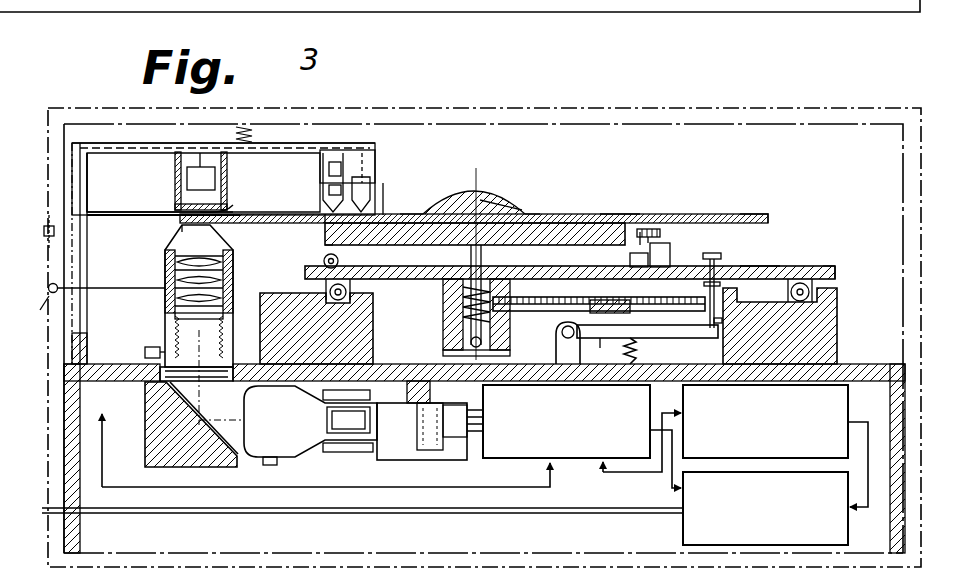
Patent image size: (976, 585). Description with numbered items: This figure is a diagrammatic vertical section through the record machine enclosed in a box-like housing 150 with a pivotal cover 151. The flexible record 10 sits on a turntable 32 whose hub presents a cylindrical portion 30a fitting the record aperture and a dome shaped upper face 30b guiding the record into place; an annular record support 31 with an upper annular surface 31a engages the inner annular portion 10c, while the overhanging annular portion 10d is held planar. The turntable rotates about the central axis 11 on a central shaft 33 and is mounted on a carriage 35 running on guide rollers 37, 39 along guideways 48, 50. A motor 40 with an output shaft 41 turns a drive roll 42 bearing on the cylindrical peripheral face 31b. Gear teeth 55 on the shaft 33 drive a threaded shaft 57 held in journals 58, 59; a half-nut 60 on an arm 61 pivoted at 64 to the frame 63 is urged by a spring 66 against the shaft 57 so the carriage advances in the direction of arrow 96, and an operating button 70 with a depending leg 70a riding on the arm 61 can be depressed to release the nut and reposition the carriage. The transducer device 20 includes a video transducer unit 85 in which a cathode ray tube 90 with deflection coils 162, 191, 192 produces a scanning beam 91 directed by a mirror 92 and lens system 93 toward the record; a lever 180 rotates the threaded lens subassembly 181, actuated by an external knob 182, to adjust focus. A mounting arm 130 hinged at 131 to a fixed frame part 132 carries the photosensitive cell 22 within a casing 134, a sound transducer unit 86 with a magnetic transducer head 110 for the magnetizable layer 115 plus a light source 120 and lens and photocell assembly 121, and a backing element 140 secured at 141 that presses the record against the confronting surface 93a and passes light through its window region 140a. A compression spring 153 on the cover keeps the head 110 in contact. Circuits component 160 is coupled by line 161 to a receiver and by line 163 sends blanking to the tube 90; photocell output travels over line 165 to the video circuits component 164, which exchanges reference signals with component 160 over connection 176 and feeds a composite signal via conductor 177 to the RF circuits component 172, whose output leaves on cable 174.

The record 10 is at (500, 192).
The inner annular portion 10c is at (625, 212).
The overhanging annular portion 10d is at (742, 212).
The central axis 11 is at (478, 180).
The transducer device 20 is at (310, 140).
The photosensitive cell 22 is at (187, 178).
The cylindrical portion 30a is at (533, 212).
The dome shaped upper face 30b is at (485, 188).
The annular record support 31 is at (610, 243).
The upper annular surface 31a is at (325, 215).
The cylindrical peripheral face 31b is at (326, 242).
The turntable 32 is at (524, 197).
The central shaft 33 is at (462, 268).
The carriage 35 is at (812, 262).
The guide roller 37 is at (326, 293).
The guide roller 39 is at (814, 296).
The motor 40 is at (672, 252).
The output shaft 41 is at (678, 240).
The drive roll 42 is at (647, 228).
The guideway 48 is at (272, 296).
The guideway 50 is at (748, 262).
The gear teeth 55 is at (463, 305).
The threaded shaft 57 is at (545, 296).
The journal 58 is at (510, 310).
The journal 59 is at (605, 312).
The half-nut 60 is at (605, 338).
The arm 61 is at (695, 340).
The frame 63 is at (845, 365).
The pivot 64 is at (556, 340).
The spring 66 is at (636, 350).
The operating button 70 is at (722, 258).
The depending leg 70a is at (722, 320).
The video transducer unit 85 is at (242, 262).
The sound transducer unit 86 is at (378, 158).
The cathode ray tube 90 is at (296, 452).
The scanning beam 91 is at (240, 412).
The mirror 92 is at (170, 400).
The lens system 93 is at (177, 250).
The confronting surface 93a is at (182, 226).
The arrow 96 is at (838, 264).
The magnetic transducer head 110 is at (375, 210).
The magnetizable layer 115 is at (400, 212).
The light source 120 is at (340, 262).
The lens and photocell assembly 121 is at (322, 190).
The mounting arm 130 is at (115, 142).
The hinge 131 is at (70, 200).
The fixed frame part 132 is at (88, 318).
The casing 134 is at (218, 186).
The backing element 140 is at (150, 212).
The window region 140a is at (222, 207).
The securing point 141 is at (98, 197).
The housing 150 is at (50, 540).
The pivotal cover 151 is at (770, 108).
The compression spring 153 is at (250, 128).
The circuits component 160 is at (480, 454).
The line 161 is at (262, 508).
The magnetic deflection coils 162 is at (327, 420).
The line 163 is at (440, 435).
The video circuits component 164 is at (848, 412).
The line 165 is at (178, 486).
The RF circuits component 172 is at (683, 525).
The cable 174 is at (455, 515).
The two-way connection 176 is at (610, 480).
The conductor 177 is at (870, 488).
The lever 180 is at (110, 289).
The lens subassembly 181 is at (168, 323).
The knob 182 is at (38, 309).
The deflection coil 191 is at (368, 392).
The deflection coil 192 is at (340, 452).